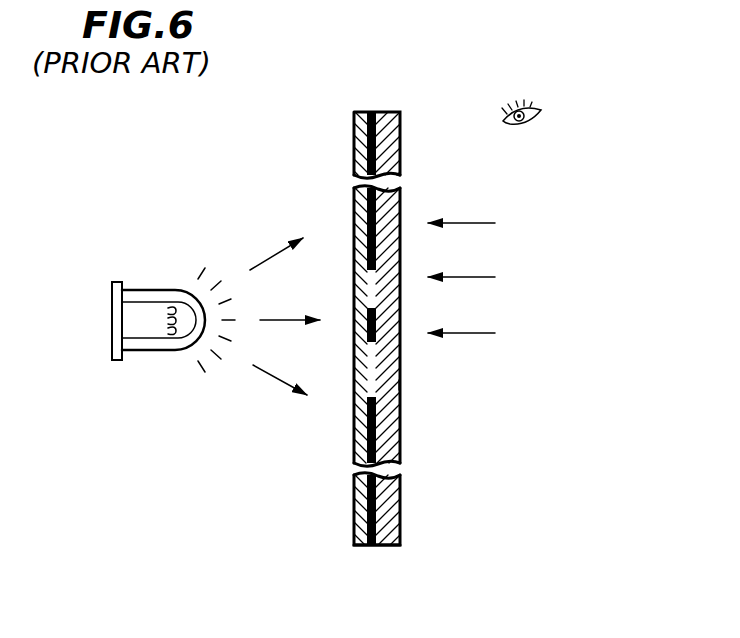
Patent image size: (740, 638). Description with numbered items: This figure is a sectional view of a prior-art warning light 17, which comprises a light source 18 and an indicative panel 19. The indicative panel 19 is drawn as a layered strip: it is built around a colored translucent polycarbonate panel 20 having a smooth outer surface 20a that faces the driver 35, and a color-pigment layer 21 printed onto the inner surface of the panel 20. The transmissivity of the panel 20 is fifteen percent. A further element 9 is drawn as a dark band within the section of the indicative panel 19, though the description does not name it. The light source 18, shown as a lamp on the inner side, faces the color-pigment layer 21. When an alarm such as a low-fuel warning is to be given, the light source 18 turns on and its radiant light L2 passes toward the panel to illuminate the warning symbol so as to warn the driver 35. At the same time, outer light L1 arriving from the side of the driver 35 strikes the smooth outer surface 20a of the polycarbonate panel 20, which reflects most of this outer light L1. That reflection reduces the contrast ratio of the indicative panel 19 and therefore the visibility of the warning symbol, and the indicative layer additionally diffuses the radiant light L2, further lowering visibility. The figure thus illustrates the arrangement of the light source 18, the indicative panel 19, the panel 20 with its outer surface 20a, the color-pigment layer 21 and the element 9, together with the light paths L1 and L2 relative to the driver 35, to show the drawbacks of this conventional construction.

The reflective electrode layer 9 is at (376, 435).
The warning light 17 is at (230, 218).
The light source 18 is at (152, 347).
The indicative panel 19 is at (381, 546).
The colored translucent polycarbonate panel 20 is at (393, 500).
The smooth outer surface 20a is at (401, 385).
The color-pigment layer 21 is at (357, 487).
The driver 35 is at (536, 111).
The outer light L1 is at (462, 278).
The radiant light L2 is at (290, 310).